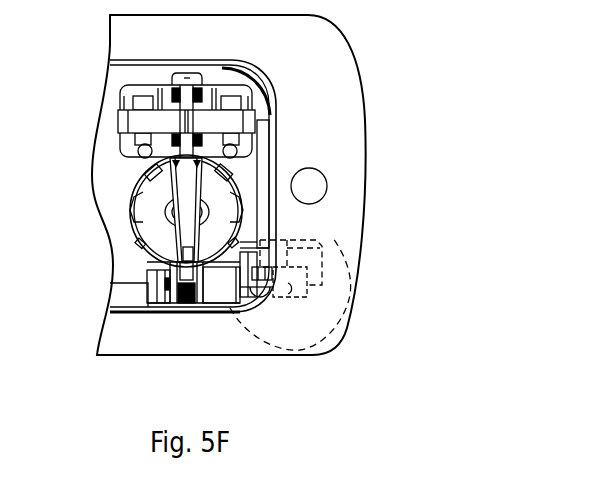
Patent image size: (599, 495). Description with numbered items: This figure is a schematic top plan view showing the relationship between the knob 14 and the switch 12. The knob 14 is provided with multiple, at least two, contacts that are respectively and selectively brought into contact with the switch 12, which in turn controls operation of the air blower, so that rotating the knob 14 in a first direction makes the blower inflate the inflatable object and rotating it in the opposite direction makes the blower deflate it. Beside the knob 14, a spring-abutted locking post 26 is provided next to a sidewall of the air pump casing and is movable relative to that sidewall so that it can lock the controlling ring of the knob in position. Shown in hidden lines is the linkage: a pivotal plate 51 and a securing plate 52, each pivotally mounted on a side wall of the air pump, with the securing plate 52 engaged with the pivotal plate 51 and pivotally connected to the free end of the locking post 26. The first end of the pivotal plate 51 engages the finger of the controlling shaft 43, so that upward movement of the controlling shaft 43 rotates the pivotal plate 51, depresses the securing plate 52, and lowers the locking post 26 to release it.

The switch 12 is at (153, 122).
The knob 14 is at (150, 213).
The locking post 26 is at (188, 273).
The securing plate 52 is at (222, 282).
The pivotal plate 51 is at (307, 257).
The controlling shaft 43 is at (293, 289).